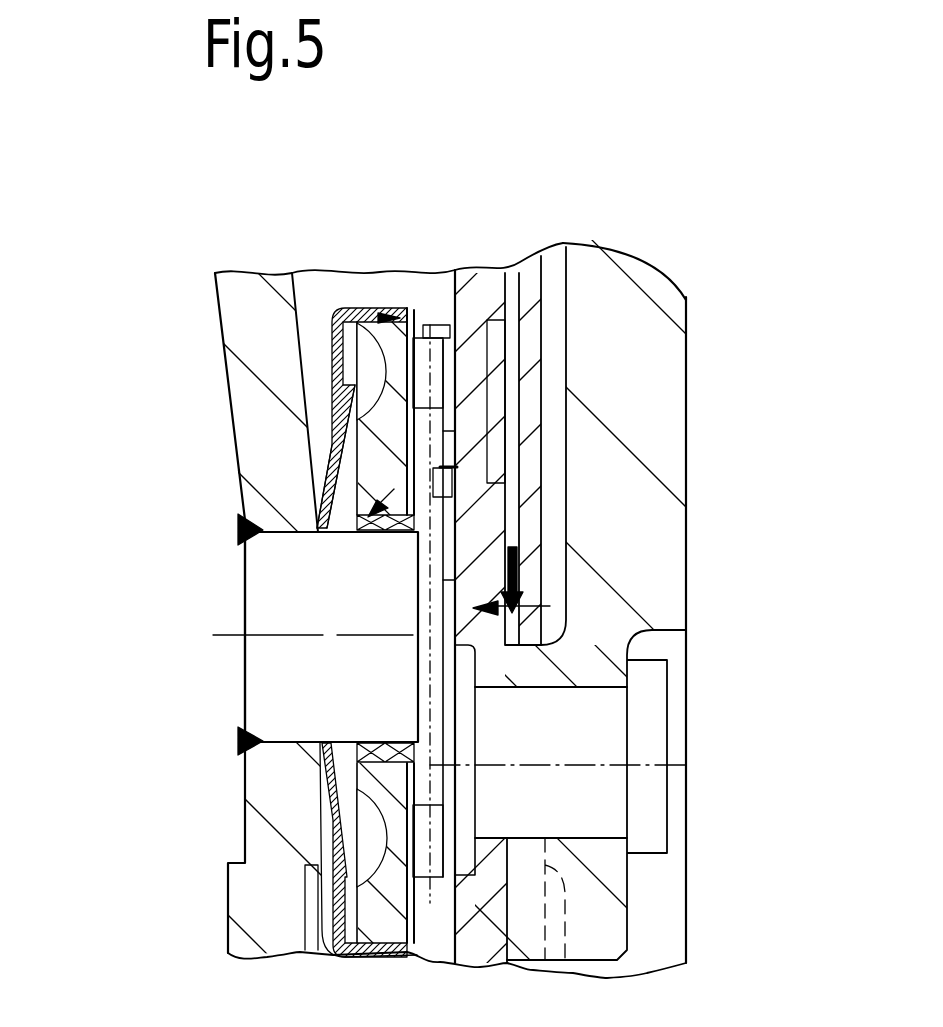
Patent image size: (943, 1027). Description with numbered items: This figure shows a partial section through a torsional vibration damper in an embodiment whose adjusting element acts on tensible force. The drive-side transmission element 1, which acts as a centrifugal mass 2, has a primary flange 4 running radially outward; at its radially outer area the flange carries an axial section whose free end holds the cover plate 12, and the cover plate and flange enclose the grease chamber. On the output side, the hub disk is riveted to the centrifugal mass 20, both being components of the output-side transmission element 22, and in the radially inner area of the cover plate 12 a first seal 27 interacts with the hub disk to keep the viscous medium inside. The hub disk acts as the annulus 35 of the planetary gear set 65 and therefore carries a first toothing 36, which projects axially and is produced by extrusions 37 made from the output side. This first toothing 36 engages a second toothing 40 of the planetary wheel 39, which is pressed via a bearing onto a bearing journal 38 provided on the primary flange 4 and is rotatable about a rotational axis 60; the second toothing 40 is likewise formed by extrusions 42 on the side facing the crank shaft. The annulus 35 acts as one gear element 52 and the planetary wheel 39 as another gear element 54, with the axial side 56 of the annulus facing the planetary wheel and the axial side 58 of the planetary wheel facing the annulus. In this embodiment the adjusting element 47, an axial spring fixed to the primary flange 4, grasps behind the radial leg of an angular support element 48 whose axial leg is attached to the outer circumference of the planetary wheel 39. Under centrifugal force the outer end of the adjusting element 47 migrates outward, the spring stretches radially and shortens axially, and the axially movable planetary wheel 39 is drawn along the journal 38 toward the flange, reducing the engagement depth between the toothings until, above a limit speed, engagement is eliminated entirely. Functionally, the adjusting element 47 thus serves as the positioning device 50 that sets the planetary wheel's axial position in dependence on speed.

The drive-side transmission element 1 is at (208, 280).
The centrifugal mass 2 is at (262, 283).
The primary flange 4 is at (270, 797).
The cover plate 12 is at (535, 247).
The centrifugal mass 20 is at (650, 275).
The output-side transmission element 22 is at (695, 301).
The first seal 27 is at (520, 565).
The annulus 35 is at (480, 520).
The first toothing 36 is at (443, 436).
The extrusions 37 is at (497, 382).
The bearing journal 38 is at (288, 597).
The planetary wheel 39 is at (240, 516).
The second toothing 40 is at (418, 357).
The extrusions 42 is at (332, 322).
The adjusting element 47 is at (320, 466).
The angular support element 48 is at (360, 362).
The positioning device 50 is at (302, 422).
The gear element 52 is at (550, 606).
The gear element 54 is at (357, 533).
The axial side of the annulus 56 is at (505, 537).
The axial side of the planetary wheel 58 is at (457, 490).
The rotational axis 60 is at (213, 638).
The planetary gear set 65 is at (427, 265).